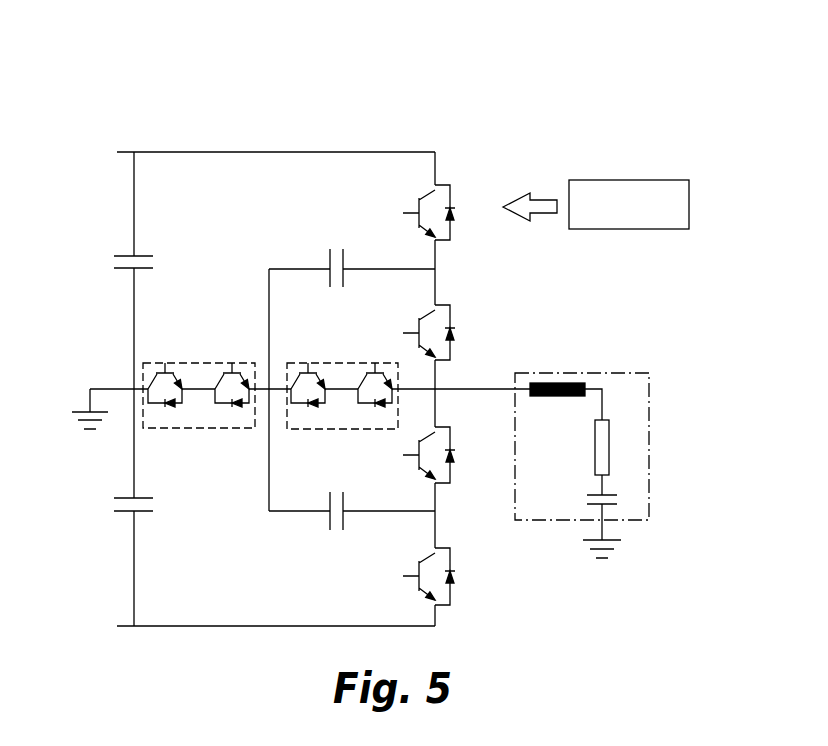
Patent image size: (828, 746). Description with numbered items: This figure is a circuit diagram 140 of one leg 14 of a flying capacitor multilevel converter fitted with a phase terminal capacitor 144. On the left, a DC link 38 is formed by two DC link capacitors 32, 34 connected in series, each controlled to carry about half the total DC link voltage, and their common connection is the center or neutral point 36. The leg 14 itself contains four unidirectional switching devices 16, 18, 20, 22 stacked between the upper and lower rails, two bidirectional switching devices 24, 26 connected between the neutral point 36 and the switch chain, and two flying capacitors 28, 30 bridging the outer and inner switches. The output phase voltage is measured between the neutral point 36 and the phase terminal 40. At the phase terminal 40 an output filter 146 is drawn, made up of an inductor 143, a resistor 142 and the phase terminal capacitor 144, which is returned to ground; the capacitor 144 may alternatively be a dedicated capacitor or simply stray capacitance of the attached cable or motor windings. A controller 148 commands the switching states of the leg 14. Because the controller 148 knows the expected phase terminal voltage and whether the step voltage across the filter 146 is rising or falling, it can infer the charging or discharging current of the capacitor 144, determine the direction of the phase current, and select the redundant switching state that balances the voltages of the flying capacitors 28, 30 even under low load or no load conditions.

The circuit diagram 140 is at (85, 85).
The DC link 38 is at (133, 187).
The leg 14 is at (437, 151).
The DC link capacitor 32 is at (128, 256).
The DC link capacitor 34 is at (122, 498).
The neutral point 36 is at (124, 388).
The phase terminal 40 is at (472, 388).
The unidirectional switching device 16 is at (450, 190).
The unidirectional switching device 18 is at (451, 316).
The unidirectional switching device 20 is at (452, 470).
The unidirectional switching device 22 is at (452, 558).
The bidirectional switching device 24 is at (205, 363).
The bidirectional switching device 26 is at (355, 363).
The flying capacitor 28 is at (330, 255).
The flying capacitor 30 is at (330, 500).
The output filter 146 is at (648, 373).
The inductor 143 is at (585, 384).
The resistor 142 is at (610, 447).
The phase terminal capacitor 144 is at (617, 494).
The controller 148 is at (686, 180).